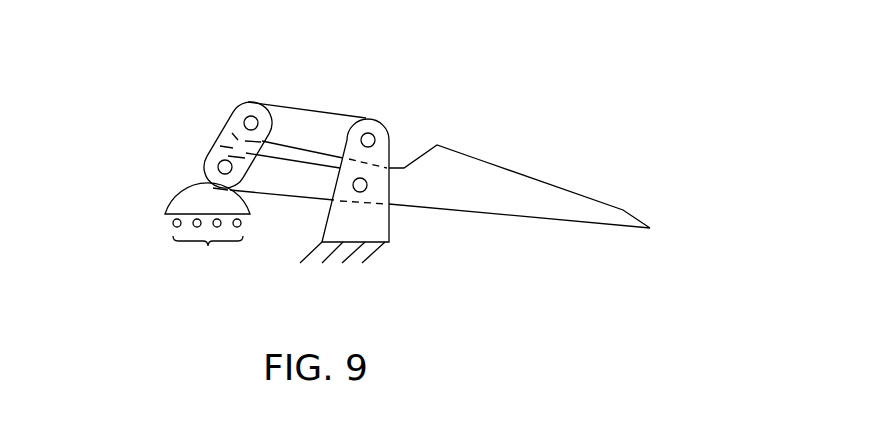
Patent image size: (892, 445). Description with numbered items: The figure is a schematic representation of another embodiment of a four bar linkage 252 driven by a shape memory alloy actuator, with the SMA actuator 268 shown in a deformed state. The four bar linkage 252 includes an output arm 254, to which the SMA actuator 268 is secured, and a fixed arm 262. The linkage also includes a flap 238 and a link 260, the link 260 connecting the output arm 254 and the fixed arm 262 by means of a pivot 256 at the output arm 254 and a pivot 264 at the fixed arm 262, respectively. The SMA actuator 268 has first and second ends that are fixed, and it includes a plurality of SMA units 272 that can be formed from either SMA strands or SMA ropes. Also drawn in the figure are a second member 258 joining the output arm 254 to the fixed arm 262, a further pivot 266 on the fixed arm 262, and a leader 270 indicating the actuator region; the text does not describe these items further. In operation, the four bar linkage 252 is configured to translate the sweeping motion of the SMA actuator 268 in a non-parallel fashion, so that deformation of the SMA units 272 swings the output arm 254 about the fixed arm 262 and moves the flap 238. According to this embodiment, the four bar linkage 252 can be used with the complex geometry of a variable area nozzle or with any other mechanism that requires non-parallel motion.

The four bar linkage 252 is at (534, 34).
The flap 238 is at (515, 180).
The output arm 254 is at (223, 127).
The pivot 256 is at (250, 116).
The second link 258 is at (208, 158).
The link 260 is at (315, 127).
The fixed arm 262 is at (388, 238).
The pivot 264 is at (371, 136).
The pivot joint 266 is at (389, 185).
The SMA actuator 268 is at (157, 238).
The port 270 is at (245, 230).
The SMA units 272 is at (208, 250).